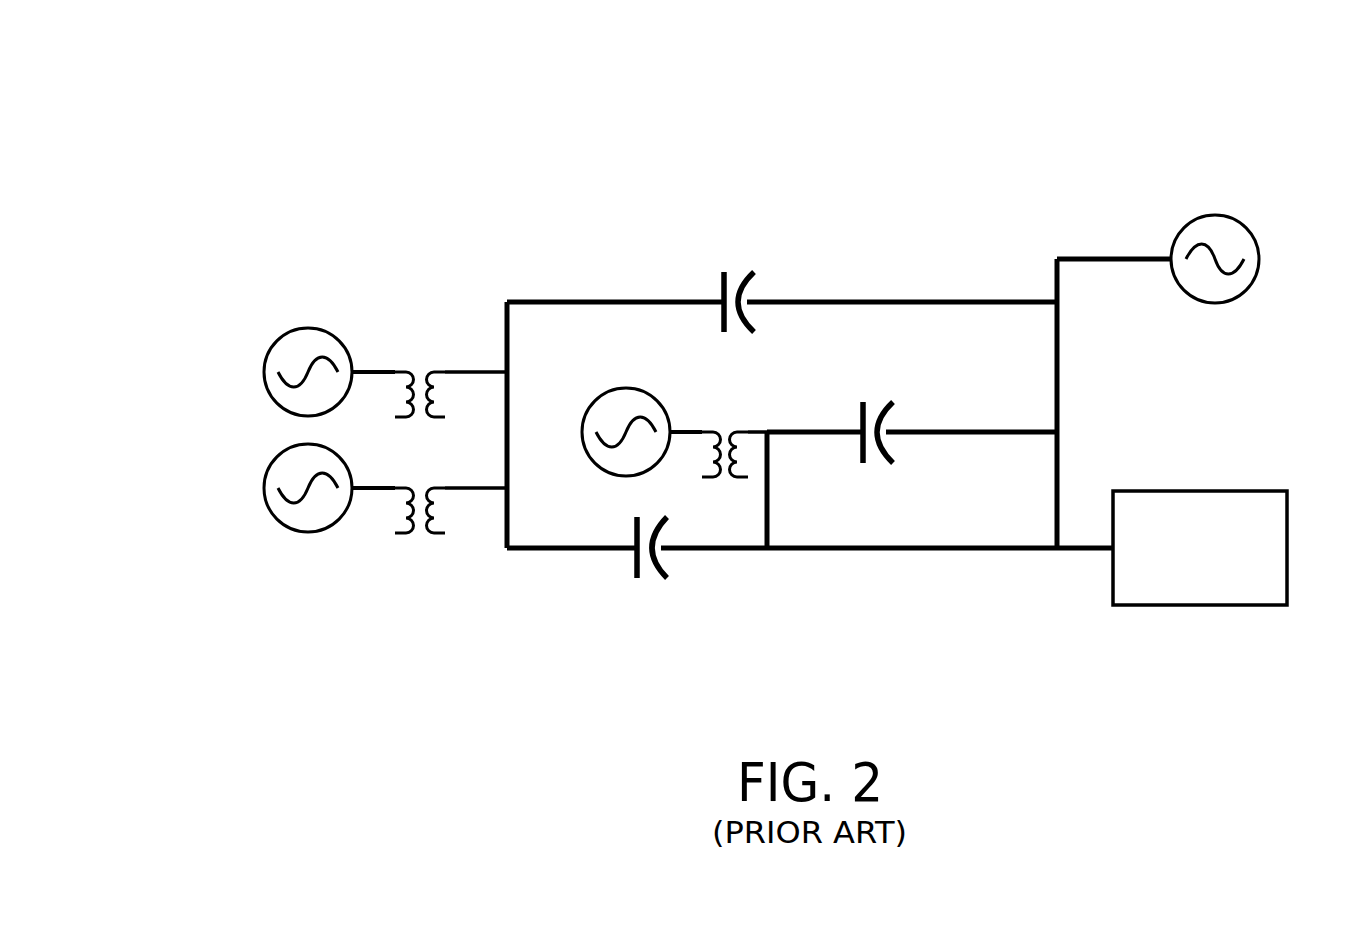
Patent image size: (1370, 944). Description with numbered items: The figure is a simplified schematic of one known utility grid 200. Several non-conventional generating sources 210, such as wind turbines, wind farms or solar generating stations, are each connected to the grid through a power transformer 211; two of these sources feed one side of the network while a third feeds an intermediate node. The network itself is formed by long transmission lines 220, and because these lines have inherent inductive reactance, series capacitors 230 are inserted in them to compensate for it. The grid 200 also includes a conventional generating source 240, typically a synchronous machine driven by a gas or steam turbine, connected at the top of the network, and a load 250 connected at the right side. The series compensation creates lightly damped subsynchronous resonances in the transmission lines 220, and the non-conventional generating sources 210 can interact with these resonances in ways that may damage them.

The utility grid 200 is at (536, 110).
The non-conventional generating source 210 is at (273, 398).
The power transformer 211 is at (420, 423).
The transmission line 220 is at (560, 298).
The series capacitor 230 is at (747, 262).
The conventional generating source 240 is at (1196, 216).
The load 250 is at (1165, 606).